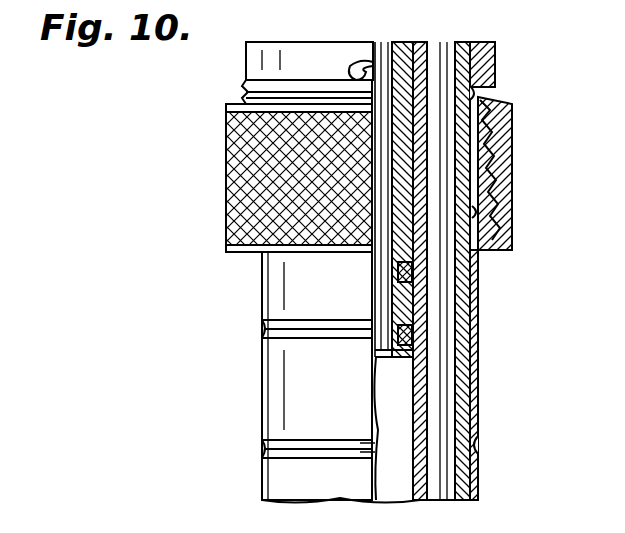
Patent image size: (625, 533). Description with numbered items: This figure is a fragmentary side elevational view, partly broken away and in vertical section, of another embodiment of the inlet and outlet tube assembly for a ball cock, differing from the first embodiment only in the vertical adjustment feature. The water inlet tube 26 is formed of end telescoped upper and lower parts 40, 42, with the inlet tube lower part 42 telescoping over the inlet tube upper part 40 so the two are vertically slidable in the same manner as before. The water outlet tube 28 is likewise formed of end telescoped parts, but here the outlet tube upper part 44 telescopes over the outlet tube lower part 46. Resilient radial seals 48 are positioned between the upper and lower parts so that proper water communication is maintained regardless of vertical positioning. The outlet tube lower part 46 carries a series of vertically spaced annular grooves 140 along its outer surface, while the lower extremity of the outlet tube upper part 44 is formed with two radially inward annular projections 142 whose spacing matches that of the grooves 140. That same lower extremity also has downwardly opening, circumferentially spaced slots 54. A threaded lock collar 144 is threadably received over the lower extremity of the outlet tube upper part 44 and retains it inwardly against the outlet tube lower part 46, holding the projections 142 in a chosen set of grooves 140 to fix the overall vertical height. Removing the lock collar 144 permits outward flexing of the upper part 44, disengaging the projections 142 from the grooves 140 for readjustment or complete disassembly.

The water inlet tube 26 is at (424, 302).
The water outlet tube 28 is at (262, 387).
The inlet tube upper part 40 is at (408, 50).
The inlet tube lower part 42 is at (425, 440).
The outlet tube upper part 44 is at (247, 62).
The outlet tube lower part 46 is at (270, 292).
The resilient radial seals 48 is at (410, 265).
The slots 54 is at (362, 62).
The annular grooves 140 is at (265, 329).
The annular projections 142 is at (478, 92).
The lock collar 144 is at (228, 158).